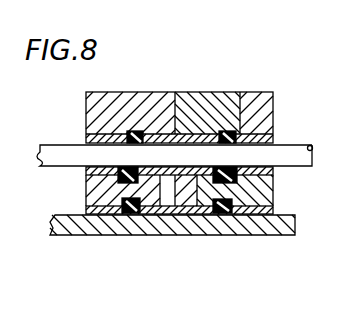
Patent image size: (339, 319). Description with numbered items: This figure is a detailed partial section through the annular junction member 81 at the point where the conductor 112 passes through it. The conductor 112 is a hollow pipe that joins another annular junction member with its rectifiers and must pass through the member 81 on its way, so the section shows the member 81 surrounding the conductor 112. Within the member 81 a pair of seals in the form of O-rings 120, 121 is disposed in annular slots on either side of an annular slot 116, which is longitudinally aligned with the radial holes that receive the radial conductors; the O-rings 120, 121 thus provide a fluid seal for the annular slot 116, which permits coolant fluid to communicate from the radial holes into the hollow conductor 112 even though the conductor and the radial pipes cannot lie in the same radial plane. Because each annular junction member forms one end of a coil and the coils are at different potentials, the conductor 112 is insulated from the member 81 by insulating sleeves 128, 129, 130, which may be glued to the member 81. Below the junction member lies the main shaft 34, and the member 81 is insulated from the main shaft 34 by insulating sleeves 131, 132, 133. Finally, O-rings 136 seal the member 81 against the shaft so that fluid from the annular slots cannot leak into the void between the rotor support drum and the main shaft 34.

The annular junction member 81 is at (217, 89).
The insulating sleeve 129 is at (150, 133).
The O-ring 120 is at (130, 134).
The O-ring 121 is at (232, 132).
The conductor 112 is at (52, 153).
The insulating sleeve 128 is at (80, 171).
The insulating sleeve 130 is at (271, 171).
The insulating sleeve 133 is at (258, 218).
The O-ring 136 is at (122, 236).
The insulating sleeve 131 is at (88, 235).
The main shaft 34 is at (147, 236).
The insulating sleeve 132 is at (162, 236).
The annular slot 116 is at (190, 236).